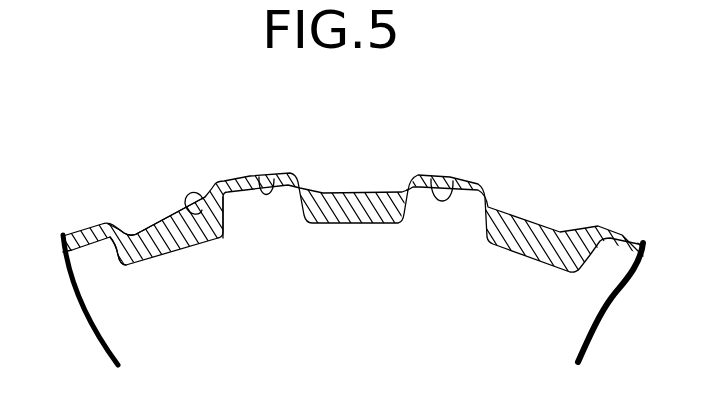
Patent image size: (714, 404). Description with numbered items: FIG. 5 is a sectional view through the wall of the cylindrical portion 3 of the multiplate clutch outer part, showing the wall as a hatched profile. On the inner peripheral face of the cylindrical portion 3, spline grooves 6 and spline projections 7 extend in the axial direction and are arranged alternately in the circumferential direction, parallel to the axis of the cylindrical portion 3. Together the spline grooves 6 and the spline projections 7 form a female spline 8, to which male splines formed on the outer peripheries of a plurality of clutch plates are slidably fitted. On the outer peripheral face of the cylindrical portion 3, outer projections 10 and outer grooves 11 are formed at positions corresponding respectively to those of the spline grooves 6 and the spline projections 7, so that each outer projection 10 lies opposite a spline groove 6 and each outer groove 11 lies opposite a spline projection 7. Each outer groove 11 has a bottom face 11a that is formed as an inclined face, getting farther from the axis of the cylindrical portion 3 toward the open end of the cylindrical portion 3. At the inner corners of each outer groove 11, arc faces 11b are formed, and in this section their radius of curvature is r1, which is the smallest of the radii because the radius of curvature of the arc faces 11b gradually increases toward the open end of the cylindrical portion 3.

The cylindrical portion 3 is at (506, 169).
The spline grooves 6 is at (271, 184).
The spline projections 7 is at (357, 224).
The female spline 8 is at (523, 268).
The outer projections 10 is at (92, 241).
The outer grooves 11 is at (161, 219).
The bottom face 11a is at (183, 226).
The arc faces 11b is at (225, 207).
The radius of curvature r1 is at (136, 231).